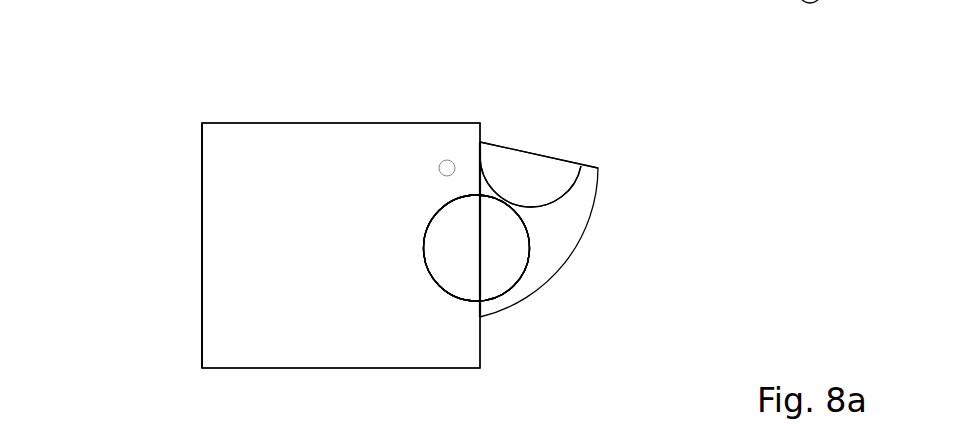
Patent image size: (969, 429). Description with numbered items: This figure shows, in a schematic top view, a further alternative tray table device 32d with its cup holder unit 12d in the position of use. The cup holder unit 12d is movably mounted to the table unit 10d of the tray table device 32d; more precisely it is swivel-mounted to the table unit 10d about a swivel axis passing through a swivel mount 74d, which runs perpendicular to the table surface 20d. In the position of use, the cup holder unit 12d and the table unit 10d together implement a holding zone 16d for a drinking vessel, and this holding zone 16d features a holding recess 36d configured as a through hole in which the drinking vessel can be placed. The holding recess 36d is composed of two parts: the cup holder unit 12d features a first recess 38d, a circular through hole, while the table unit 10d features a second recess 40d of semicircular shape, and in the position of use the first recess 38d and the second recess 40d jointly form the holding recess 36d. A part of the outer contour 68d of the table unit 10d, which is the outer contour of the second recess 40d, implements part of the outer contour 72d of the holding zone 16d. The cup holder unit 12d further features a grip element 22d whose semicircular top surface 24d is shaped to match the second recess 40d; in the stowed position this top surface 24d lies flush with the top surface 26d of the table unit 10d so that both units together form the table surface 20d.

The table unit 10d is at (341, 110).
The cup holder unit 12d is at (616, 135).
The holding zone 16d is at (510, 252).
The table surface 20d is at (240, 163).
The grip element 22d is at (507, 168).
The top surface of the grip element 24d is at (507, 168).
The top surface of the table unit 26d is at (233, 305).
The tray table device 32d is at (155, 160).
The holding recess 36d is at (528, 223).
The first recess 38d is at (528, 223).
The outer contour of the holding zone 72d is at (528, 223).
The second recess 40d is at (445, 290).
The outer contour of the table unit 68d is at (445, 290).
The swivel mount 74d is at (447, 160).